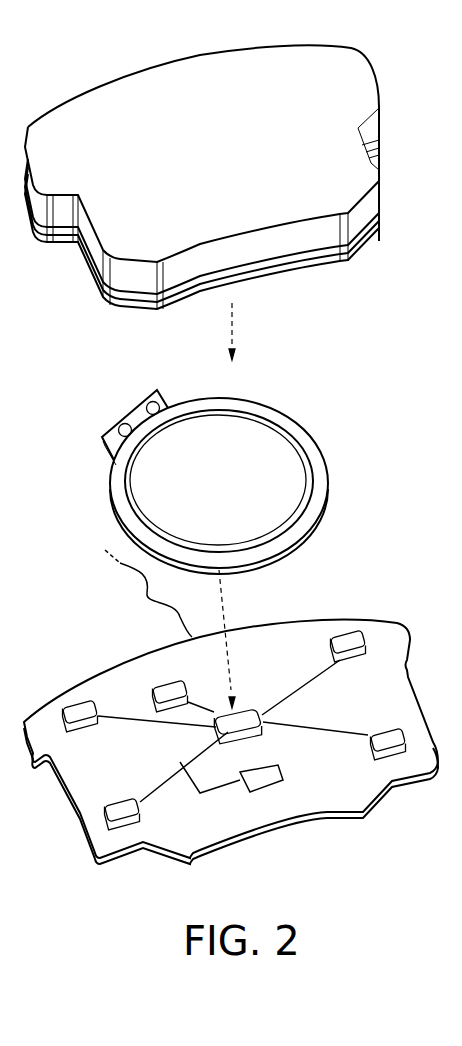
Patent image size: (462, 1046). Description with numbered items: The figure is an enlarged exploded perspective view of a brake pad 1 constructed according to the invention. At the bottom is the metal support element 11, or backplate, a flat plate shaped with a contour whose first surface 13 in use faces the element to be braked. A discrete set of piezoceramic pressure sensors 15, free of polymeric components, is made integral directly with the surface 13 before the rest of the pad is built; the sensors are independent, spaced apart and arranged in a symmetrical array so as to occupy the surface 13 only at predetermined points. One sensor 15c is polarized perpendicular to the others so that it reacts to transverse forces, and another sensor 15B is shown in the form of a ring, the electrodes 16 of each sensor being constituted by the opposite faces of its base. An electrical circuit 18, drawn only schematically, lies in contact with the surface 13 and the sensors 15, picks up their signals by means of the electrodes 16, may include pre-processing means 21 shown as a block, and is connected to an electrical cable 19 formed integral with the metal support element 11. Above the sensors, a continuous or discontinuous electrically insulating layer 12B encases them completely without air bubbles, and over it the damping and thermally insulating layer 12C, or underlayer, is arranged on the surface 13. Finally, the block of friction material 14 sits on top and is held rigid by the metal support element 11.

The brake pad 1 is at (411, 109).
The block of friction material 14 is at (104, 103).
The electrically insulating layer 12B is at (265, 280).
The damping and thermally insulating layer 12C is at (303, 241).
The piezoceramic pressure sensor 15 is at (342, 500).
The ring-shaped sensor 15B is at (296, 432).
The transversely polarized sensor 15c is at (165, 684).
The electrical connection electrodes 16 is at (150, 403).
The first surface 13 is at (390, 636).
The electrical cable 19 is at (138, 588).
The electrical circuit 18 is at (332, 735).
The pre-processing means 21 is at (265, 771).
The metal support element 11 is at (360, 793).